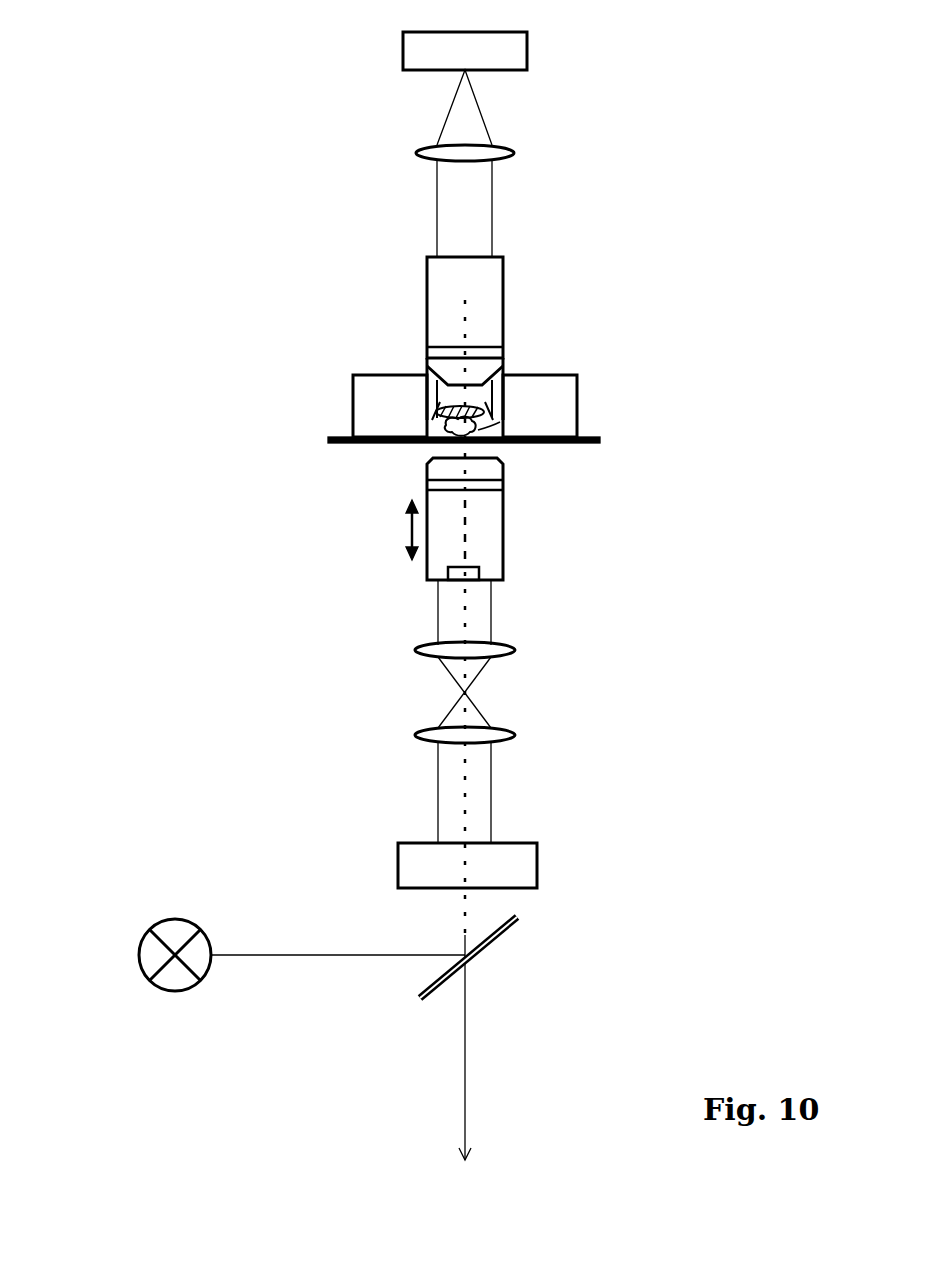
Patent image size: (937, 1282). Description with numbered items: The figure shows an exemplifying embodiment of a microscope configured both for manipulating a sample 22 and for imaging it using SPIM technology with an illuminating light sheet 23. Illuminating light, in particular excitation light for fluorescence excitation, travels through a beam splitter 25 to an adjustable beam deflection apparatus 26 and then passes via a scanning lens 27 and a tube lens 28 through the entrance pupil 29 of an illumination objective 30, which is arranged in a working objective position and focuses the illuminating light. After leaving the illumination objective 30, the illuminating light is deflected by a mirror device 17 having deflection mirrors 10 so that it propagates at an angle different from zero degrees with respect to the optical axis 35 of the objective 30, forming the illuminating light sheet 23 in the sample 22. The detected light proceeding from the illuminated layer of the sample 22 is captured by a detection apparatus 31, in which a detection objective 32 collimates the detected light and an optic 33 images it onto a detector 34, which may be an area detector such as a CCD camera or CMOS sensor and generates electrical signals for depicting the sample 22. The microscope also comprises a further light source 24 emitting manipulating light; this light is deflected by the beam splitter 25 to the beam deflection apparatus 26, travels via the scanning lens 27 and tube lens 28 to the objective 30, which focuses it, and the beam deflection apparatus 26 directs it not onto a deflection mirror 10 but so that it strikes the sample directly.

The deflection mirror 10 is at (432, 398).
The mirror device 17 is at (545, 392).
The sample 22 is at (500, 436).
The illuminating light sheet 23 is at (442, 422).
The further light source 24 is at (150, 925).
The beam splitter 25 is at (500, 945).
The adjustable beam deflection apparatus 26 is at (537, 866).
The scanning lens 27 is at (517, 735).
The tube lens 28 is at (517, 650).
The entrance pupil 29 is at (448, 574).
The illumination objective 30 is at (503, 520).
The detection apparatus 31 is at (352, 162).
The detection objective 32 is at (503, 328).
The optic 33 is at (514, 153).
The detector 34 is at (527, 50).
The optical axis 35 is at (465, 537).